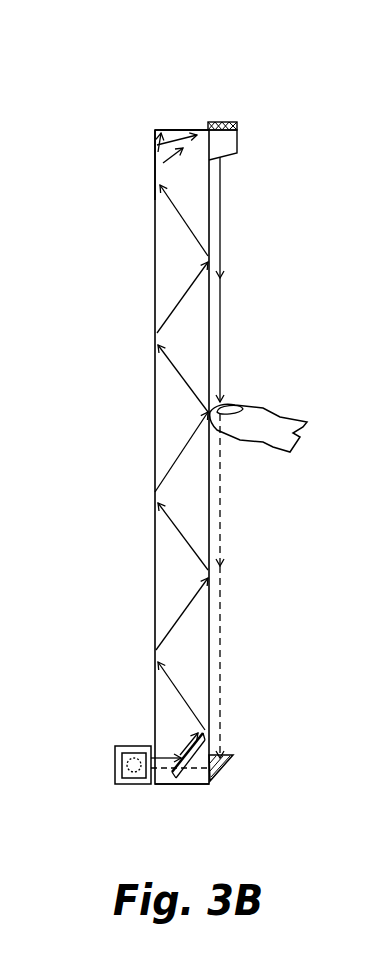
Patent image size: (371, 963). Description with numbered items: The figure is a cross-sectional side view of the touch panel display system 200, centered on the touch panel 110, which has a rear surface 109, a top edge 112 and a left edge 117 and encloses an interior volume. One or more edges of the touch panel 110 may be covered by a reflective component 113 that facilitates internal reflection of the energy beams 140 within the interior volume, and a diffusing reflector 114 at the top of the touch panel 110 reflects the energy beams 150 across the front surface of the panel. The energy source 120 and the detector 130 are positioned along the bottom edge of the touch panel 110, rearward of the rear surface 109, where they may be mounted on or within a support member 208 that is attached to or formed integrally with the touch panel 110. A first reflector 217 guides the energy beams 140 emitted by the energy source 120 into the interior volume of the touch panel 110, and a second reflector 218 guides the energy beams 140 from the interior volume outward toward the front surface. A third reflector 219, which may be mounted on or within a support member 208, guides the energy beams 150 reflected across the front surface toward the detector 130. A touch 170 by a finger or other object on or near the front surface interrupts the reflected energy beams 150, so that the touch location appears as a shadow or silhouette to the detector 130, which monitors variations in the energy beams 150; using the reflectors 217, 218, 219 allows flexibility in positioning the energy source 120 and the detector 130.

The touch panel display system 200 is at (275, 68).
The touch panel 110 is at (140, 303).
The rear surface 109 is at (153, 397).
The left edge 117 is at (153, 250).
The top edge 112 is at (155, 134).
The reflective component 113 is at (182, 120).
The diffusing reflector 114 is at (237, 148).
The second reflector 218 is at (160, 166).
The energy beams 140 is at (170, 443).
The energy beams 150 is at (223, 320).
The touch 170 is at (227, 403).
The energy source 120 is at (122, 758).
The detector 130 is at (140, 778).
The rear support member 208 is at (140, 752).
The first reflector 217 is at (195, 768).
The third reflector 219 is at (215, 778).